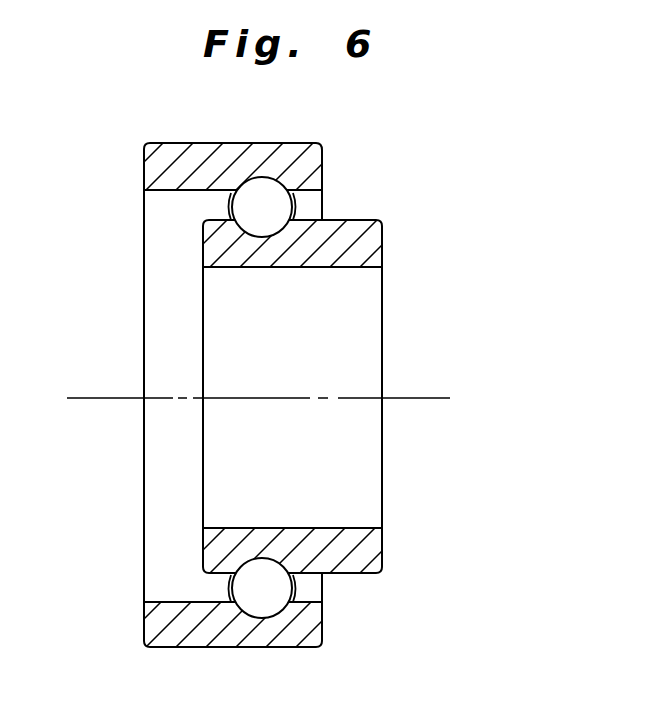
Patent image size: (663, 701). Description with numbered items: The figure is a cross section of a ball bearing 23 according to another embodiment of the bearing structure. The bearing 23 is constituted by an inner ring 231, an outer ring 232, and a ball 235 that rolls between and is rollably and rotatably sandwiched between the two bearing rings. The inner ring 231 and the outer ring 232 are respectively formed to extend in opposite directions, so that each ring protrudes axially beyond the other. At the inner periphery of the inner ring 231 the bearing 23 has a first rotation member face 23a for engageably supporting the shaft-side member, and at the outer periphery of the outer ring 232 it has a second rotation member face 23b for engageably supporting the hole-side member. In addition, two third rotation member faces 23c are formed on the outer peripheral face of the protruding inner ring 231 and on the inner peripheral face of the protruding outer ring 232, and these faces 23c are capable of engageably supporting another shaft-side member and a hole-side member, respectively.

The bearing 23 is at (480, 147).
The first rotation member face 23a is at (363, 268).
The second rotation member face 23b is at (213, 142).
The third rotation member faces 23c is at (177, 191).
The inner ring 231 is at (213, 557).
The outer ring 232 is at (153, 625).
The ball 235 is at (247, 593).